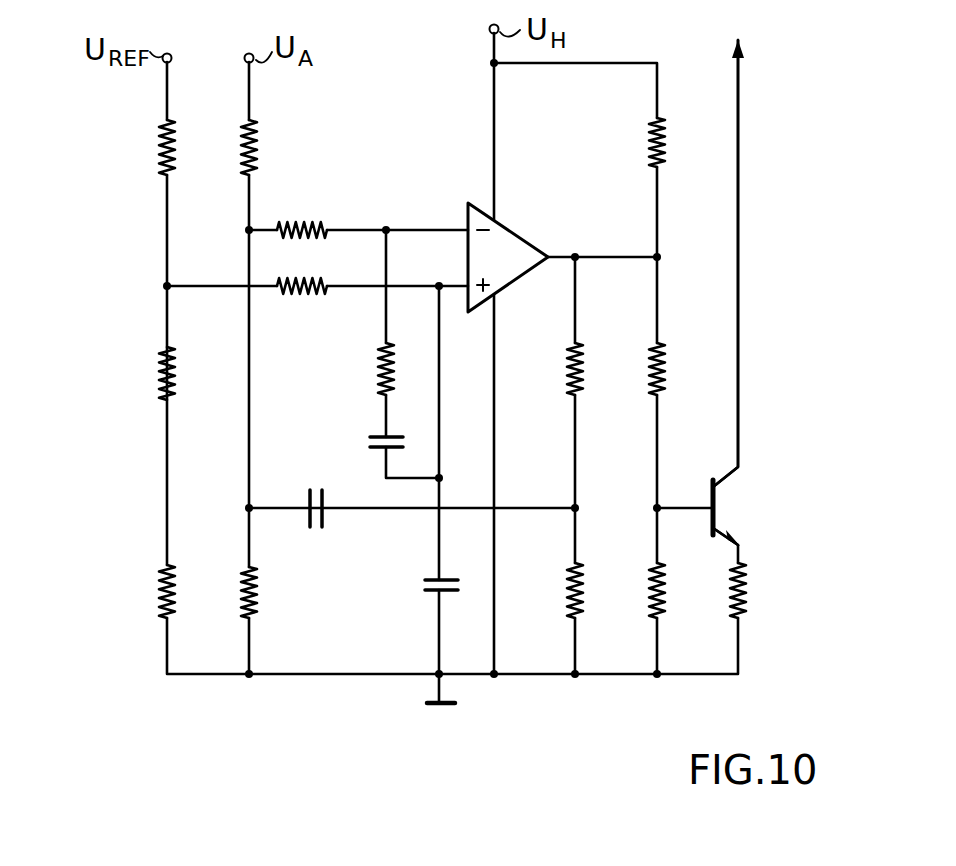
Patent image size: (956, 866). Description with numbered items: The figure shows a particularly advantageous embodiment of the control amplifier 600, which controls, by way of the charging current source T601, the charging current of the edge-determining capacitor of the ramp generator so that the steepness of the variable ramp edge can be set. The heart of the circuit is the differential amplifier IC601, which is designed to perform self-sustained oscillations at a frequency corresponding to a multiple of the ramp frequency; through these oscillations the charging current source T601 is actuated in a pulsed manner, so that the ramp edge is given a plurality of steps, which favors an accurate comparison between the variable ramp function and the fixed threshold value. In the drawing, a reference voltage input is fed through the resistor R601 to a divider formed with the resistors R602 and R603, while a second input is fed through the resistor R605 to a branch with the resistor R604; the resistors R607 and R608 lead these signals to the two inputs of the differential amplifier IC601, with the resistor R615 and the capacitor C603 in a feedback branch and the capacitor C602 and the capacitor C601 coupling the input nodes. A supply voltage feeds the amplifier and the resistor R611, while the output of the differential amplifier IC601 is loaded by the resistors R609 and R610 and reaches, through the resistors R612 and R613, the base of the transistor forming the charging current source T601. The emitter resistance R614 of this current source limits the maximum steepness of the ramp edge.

The resistor R601 is at (160, 152).
The resistor R602 is at (160, 392).
The resistor R603 is at (158, 608).
The resistor R604 is at (262, 602).
The resistor R605 is at (258, 145).
The resistor R607 is at (328, 228).
The resistor R608 is at (282, 292).
The resistor R609 is at (566, 374).
The resistor R610 is at (564, 584).
The resistor R611 is at (648, 156).
The resistor R612 is at (640, 372).
The resistor R613 is at (650, 602).
The emitter resistance R614 is at (746, 604).
The resistor R615 is at (376, 384).
The capacitor C601 is at (420, 594).
The capacitor C602 is at (300, 514).
The capacitor C603 is at (370, 432).
The differential amplifier IC601 is at (564, 218).
The controllable charging current source T601 is at (722, 498).
The control amplifier 600 is at (158, 778).